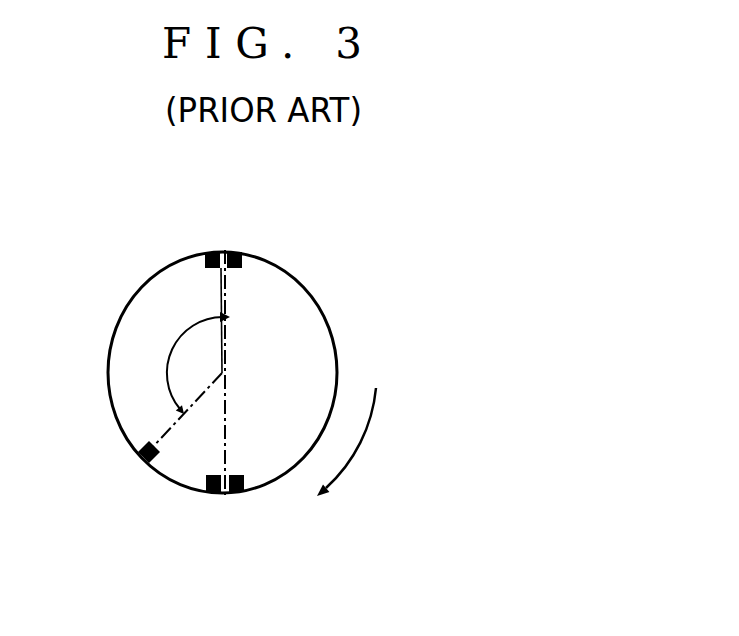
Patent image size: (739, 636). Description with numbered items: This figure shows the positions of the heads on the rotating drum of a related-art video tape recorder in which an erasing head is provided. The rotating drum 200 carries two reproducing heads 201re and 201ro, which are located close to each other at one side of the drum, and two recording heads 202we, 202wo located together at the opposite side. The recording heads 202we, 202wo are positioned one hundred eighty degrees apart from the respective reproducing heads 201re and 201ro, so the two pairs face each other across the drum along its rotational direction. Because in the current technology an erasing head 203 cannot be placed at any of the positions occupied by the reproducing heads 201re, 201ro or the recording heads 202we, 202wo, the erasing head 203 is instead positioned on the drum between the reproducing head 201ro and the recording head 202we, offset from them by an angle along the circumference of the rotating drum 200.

The rotating drum 200 is at (315, 302).
The reproducing head 201ro is at (208, 252).
The reproducing head 201re is at (236, 252).
The recording head 202we is at (213, 492).
The recording head 202wo is at (240, 492).
The erasing head 203 is at (140, 452).